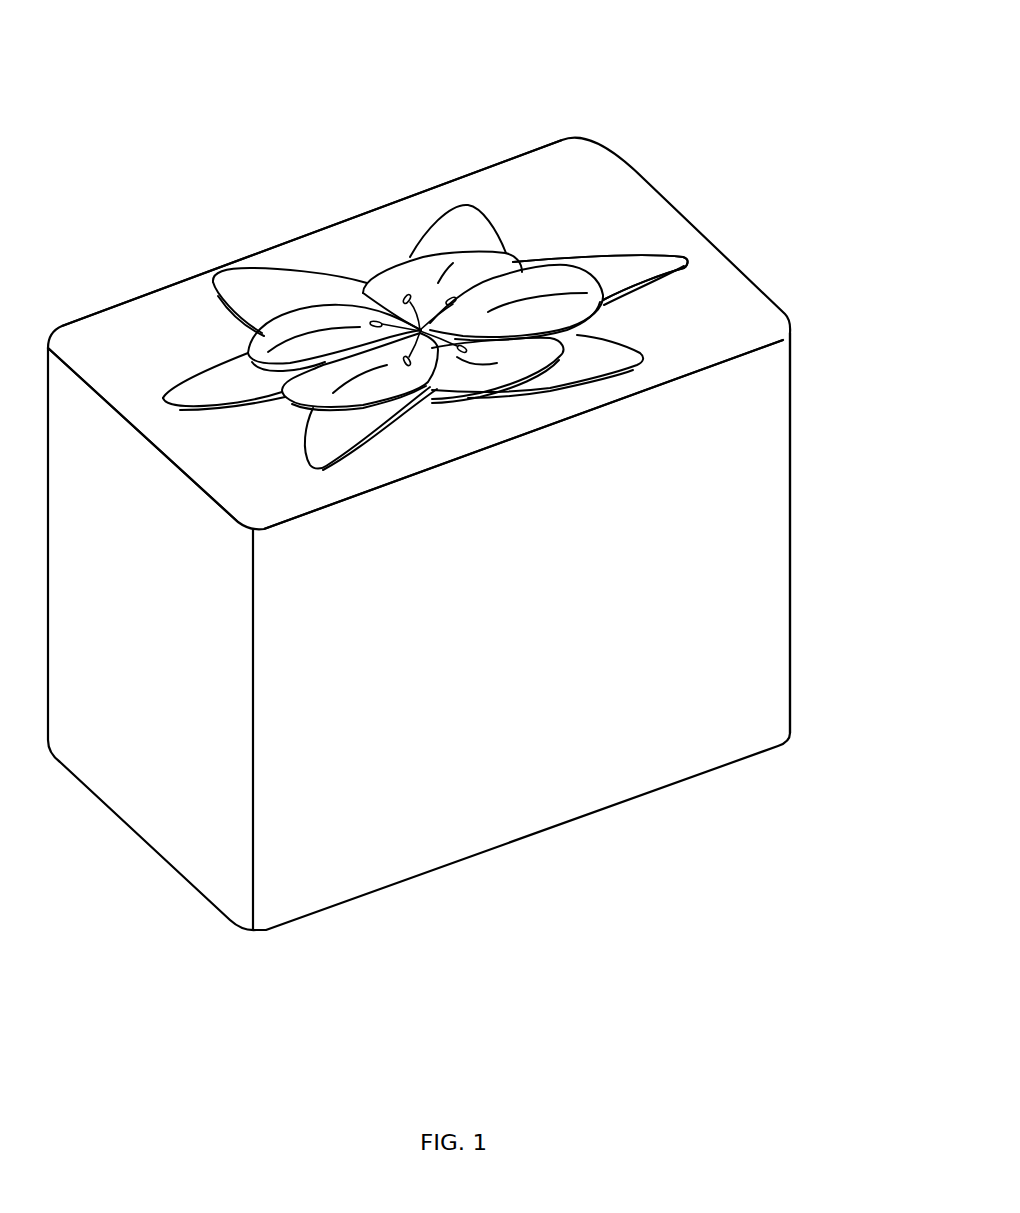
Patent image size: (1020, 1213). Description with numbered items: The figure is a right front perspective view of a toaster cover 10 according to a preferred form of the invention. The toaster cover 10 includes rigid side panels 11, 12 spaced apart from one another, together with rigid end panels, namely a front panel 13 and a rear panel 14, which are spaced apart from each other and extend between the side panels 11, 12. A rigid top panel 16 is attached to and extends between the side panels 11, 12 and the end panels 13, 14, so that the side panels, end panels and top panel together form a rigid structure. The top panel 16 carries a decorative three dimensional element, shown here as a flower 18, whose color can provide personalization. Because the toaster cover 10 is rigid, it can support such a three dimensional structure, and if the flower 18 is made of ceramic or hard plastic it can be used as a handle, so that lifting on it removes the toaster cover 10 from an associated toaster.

The toaster cover 10 is at (765, 99).
The side panel 11 is at (520, 648).
The side panel 12 is at (88, 302).
The front panel 13 is at (143, 648).
The rear panel 14 is at (802, 436).
The top panel 16 is at (410, 213).
The flower 18 is at (587, 253).